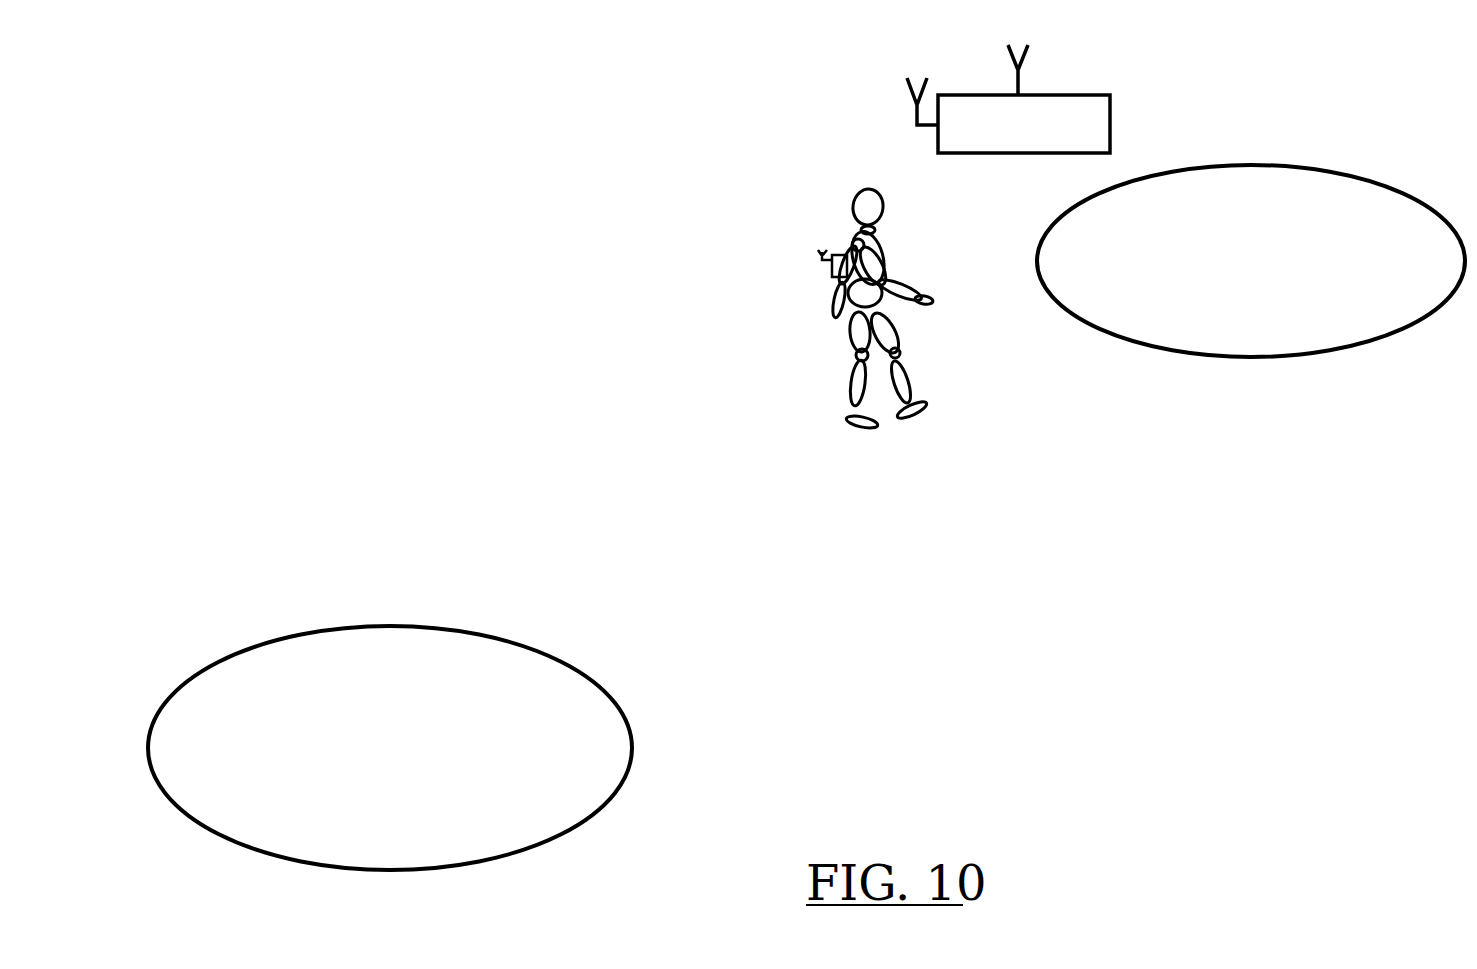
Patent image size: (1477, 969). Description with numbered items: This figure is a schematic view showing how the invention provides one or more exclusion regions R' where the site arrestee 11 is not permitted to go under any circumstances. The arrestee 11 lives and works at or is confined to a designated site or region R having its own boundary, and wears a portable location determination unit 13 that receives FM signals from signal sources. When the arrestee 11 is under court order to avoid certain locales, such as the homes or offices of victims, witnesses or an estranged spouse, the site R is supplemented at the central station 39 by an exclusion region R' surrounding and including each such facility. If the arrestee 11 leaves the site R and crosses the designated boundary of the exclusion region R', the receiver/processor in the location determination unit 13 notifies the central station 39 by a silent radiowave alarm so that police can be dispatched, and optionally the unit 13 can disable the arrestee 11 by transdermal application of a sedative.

The central station 39 is at (1060, 110).
The site arrestee 11 is at (880, 260).
The portable location determination unit 13 is at (845, 270).
The exclusion region R' is at (1251, 239).
The site or region R is at (390, 728).